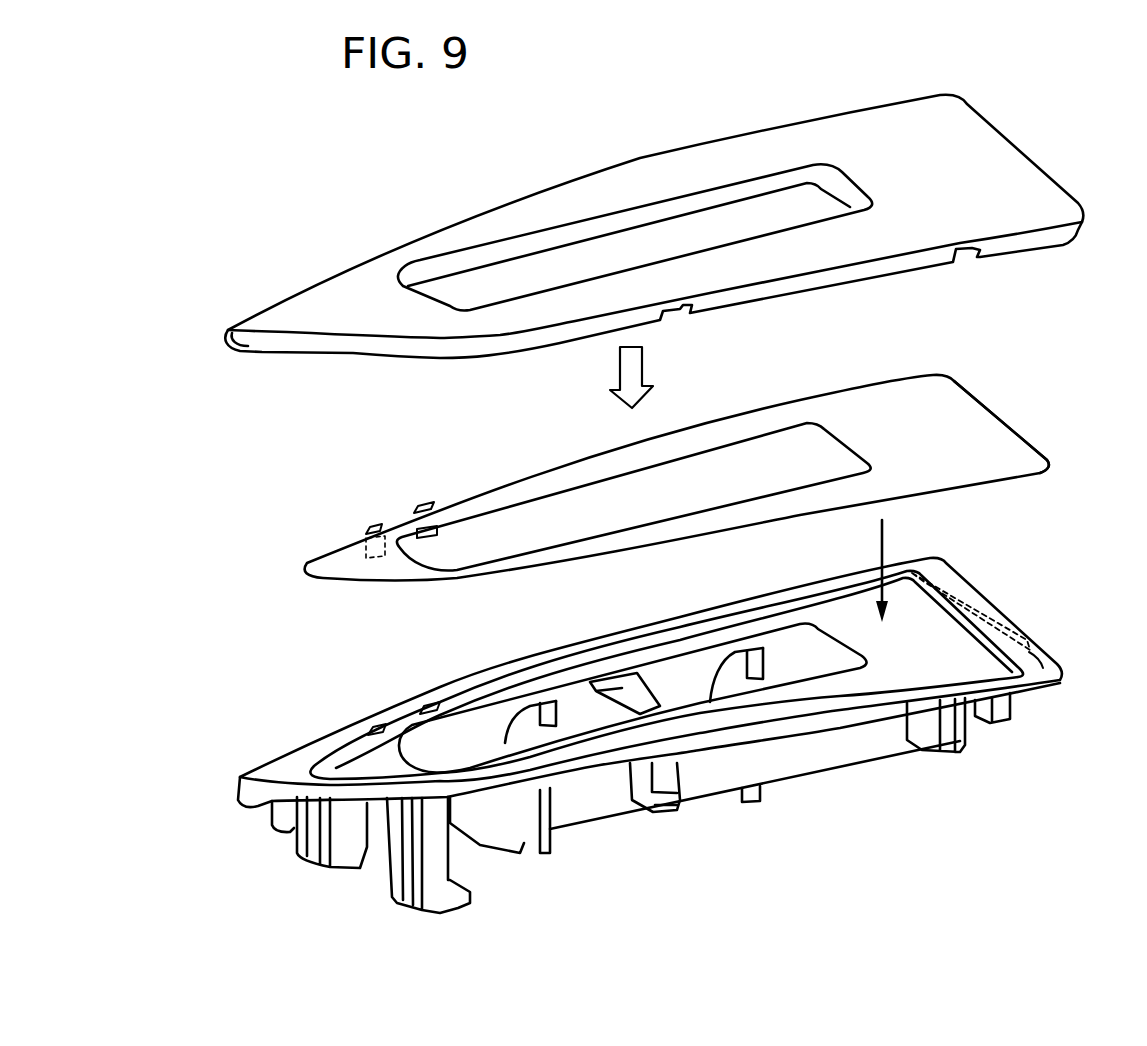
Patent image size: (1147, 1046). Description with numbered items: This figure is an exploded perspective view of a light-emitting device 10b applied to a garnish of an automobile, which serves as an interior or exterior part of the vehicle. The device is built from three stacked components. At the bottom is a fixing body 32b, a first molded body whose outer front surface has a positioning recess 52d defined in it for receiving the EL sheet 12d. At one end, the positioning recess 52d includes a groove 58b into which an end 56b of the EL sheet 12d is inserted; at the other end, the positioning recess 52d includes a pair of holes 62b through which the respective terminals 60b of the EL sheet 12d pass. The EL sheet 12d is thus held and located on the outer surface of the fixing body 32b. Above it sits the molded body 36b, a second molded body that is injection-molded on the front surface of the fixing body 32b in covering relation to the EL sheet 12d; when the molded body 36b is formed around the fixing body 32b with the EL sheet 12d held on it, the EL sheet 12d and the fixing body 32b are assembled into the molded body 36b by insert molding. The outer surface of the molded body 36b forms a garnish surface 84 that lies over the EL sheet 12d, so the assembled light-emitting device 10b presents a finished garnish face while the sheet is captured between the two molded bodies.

The light-emitting device 10b is at (424, 164).
The garnish surface 84 is at (891, 142).
The molded body 36b is at (682, 202).
The EL sheet 12d is at (1001, 409).
The end of the EL sheet 56b is at (1024, 439).
The terminals 60b is at (420, 508).
The groove 58b is at (950, 585).
The fixing body 32b is at (994, 596).
The positioning recess 52d is at (957, 666).
The holes 62b is at (427, 710).